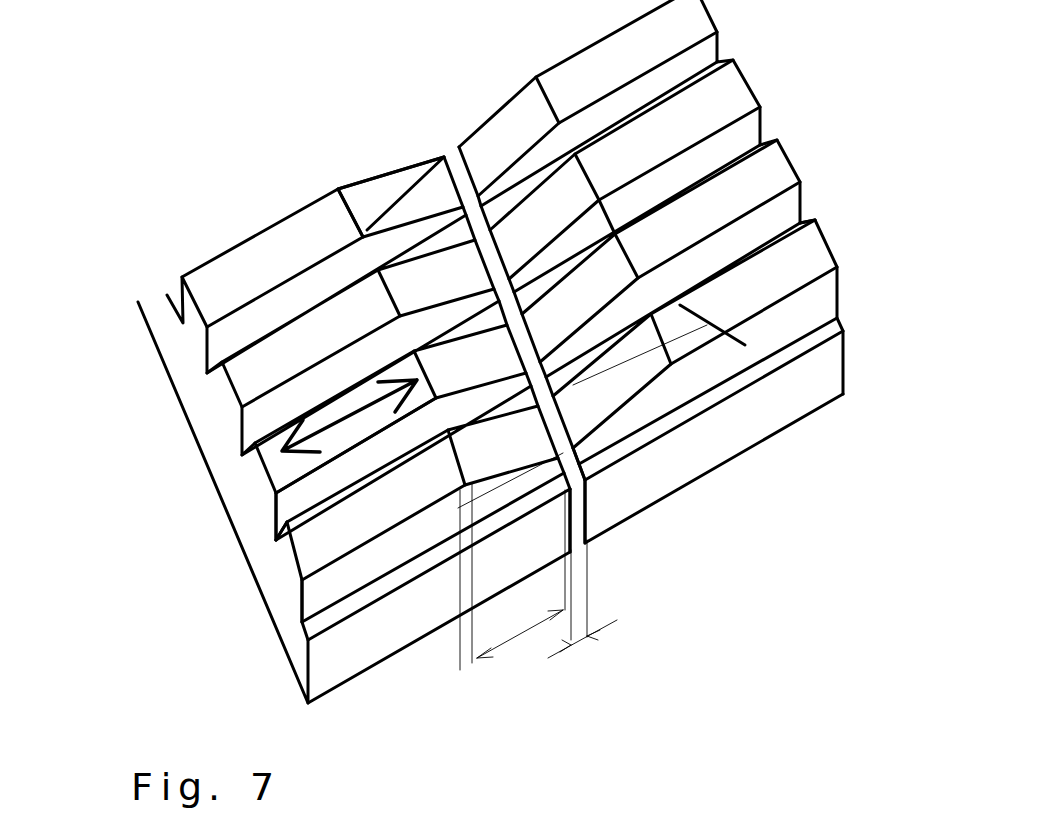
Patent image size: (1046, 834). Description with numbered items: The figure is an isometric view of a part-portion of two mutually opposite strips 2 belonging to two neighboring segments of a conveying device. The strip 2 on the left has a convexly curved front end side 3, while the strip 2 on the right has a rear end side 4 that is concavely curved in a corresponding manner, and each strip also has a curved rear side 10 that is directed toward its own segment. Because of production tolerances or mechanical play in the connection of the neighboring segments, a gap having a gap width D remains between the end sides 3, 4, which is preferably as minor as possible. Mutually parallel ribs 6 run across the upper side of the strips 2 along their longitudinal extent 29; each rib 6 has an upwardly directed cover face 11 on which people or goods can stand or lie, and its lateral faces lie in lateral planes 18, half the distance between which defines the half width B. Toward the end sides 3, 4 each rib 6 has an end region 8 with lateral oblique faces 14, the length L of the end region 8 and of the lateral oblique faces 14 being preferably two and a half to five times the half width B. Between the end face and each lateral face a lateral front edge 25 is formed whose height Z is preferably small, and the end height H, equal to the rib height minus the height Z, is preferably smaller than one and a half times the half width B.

The strip 2 is at (183, 352).
The front end side 3 is at (466, 168).
The rear end side 4 is at (583, 506).
The rib 6 is at (333, 280).
The end region 8 is at (382, 186).
The rear side 10 is at (795, 258).
The cover face 11 is at (407, 488).
The lateral oblique face 14 is at (618, 409).
The lateral plane 18 is at (360, 565).
The lateral front edge 25 is at (585, 460).
The longitudinal extent 29 is at (369, 405).
The half width B is at (712, 330).
The end height H is at (463, 516).
The height of the lateral front edges Z is at (462, 557).
The length of the end region L is at (507, 638).
The gap width D is at (578, 643).